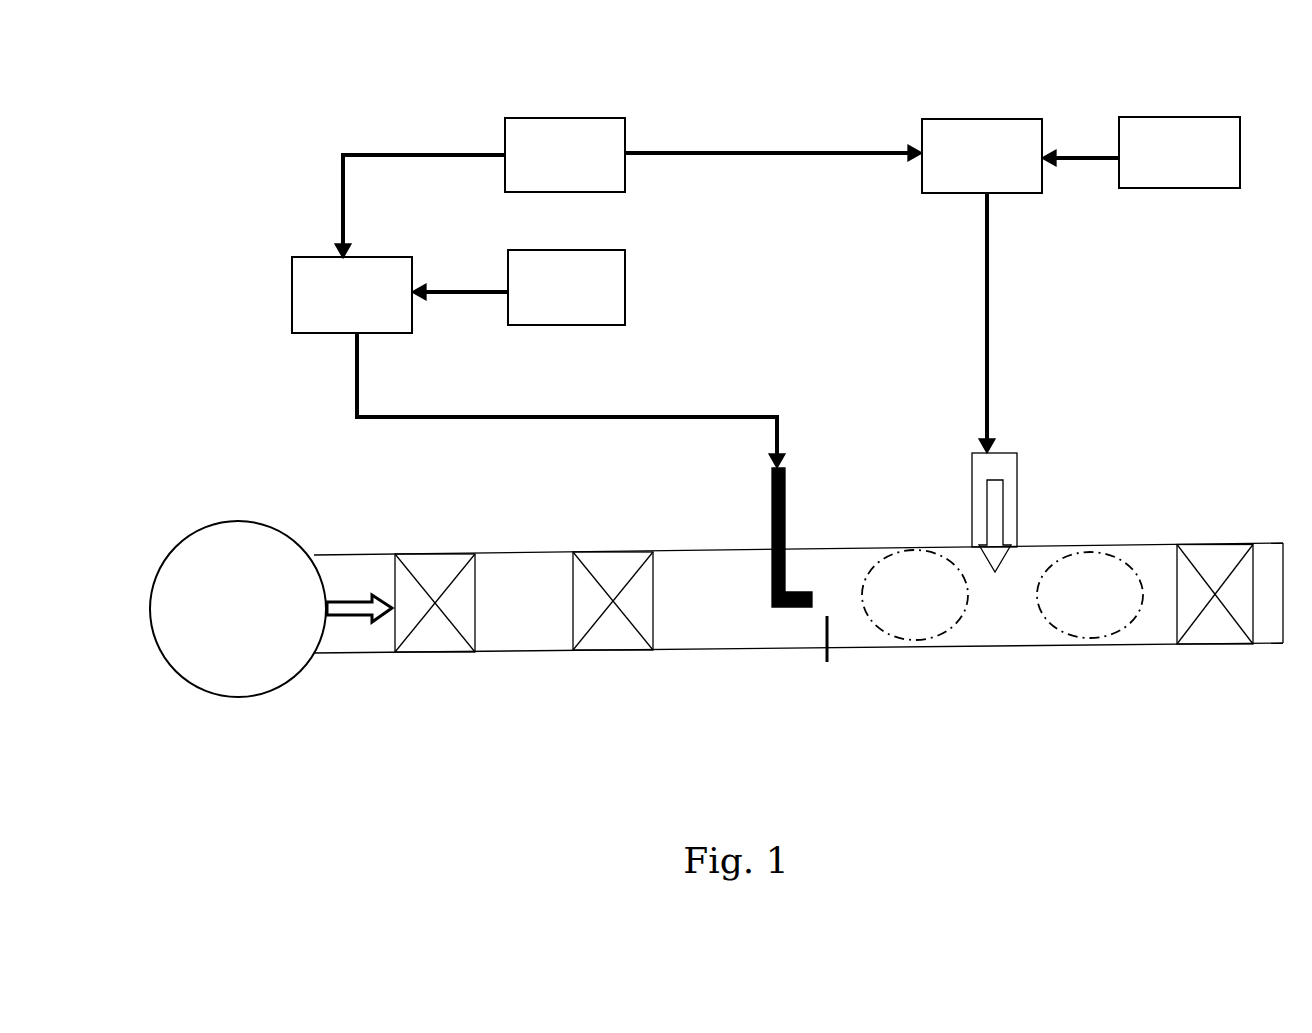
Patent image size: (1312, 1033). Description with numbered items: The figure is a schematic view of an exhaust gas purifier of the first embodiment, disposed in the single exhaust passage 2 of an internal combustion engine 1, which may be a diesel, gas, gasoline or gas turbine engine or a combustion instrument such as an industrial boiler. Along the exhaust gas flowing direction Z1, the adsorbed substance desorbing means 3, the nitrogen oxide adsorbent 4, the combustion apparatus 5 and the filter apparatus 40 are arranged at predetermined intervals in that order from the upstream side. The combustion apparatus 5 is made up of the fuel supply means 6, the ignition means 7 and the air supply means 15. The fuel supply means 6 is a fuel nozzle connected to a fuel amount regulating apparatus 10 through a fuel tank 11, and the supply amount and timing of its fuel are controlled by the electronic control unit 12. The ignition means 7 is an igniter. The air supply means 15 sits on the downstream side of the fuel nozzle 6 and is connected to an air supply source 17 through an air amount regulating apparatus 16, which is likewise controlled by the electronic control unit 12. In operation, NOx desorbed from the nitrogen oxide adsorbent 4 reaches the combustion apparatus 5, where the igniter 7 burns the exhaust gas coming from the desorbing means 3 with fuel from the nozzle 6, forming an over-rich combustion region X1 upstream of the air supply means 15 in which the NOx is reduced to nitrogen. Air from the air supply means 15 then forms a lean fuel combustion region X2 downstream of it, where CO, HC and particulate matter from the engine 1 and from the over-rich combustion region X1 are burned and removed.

The internal combustion engine 1 is at (175, 548).
The exhaust passage 2 is at (705, 651).
The adsorbed substance desorbing means 3 is at (430, 645).
The nitrogen oxide adsorbent 4 is at (605, 640).
The combustion apparatus 5 is at (915, 488).
The fuel supply means 6 is at (771, 494).
The ignition means 7 is at (823, 655).
The fuel amount regulating apparatus 10 is at (292, 310).
The fuel tank 11 is at (625, 297).
The electronic control unit 12 is at (565, 118).
The air supply means 15 is at (1017, 480).
The air amount regulating apparatus 16 is at (978, 119).
The air supply source 17 is at (1178, 117).
The filter apparatus 40 is at (1212, 635).
The over-rich combustion region X1 is at (956, 632).
The lean fuel combustion region X2 is at (1070, 635).
The exhaust gas flowing direction Z1 is at (355, 598).